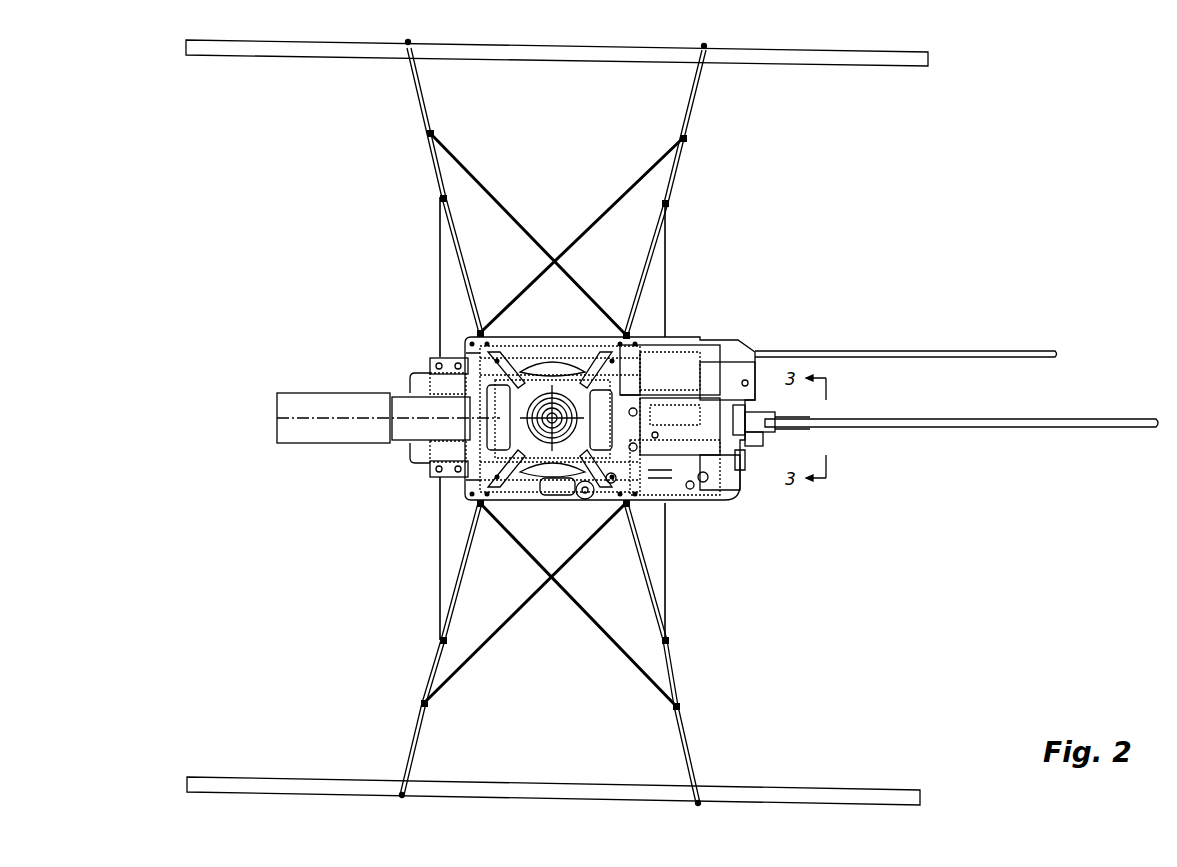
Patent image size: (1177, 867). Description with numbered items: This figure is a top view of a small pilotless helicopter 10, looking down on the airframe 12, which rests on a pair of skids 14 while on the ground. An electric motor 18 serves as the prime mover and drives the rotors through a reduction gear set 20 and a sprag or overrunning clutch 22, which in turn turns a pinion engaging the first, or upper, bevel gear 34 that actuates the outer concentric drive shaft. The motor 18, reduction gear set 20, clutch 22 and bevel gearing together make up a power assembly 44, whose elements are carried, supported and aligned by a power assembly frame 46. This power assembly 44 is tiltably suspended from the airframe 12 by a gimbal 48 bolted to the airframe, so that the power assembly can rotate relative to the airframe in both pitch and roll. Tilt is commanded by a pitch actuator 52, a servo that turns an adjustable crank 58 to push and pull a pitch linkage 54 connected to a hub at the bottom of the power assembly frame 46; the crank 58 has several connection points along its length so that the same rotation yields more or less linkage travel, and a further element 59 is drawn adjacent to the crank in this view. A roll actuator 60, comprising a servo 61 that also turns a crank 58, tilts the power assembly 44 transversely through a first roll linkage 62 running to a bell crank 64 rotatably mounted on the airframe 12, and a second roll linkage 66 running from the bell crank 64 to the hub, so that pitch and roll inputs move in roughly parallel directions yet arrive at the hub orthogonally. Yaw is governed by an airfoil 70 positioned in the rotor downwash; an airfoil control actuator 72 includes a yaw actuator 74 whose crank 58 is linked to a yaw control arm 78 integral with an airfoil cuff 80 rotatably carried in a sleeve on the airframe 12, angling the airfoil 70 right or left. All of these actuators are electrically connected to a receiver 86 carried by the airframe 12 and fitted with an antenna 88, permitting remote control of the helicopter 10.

The pilotless helicopter 10 is at (832, 618).
The airframe 12 is at (515, 505).
The skids 14 is at (577, 64).
The electric motor 18 is at (325, 393).
The reduction gear set 20 is at (392, 397).
The overrunning clutch 22 is at (470, 416).
The first bevel gear 34 is at (535, 365).
The power assembly 44 is at (410, 445).
The power assembly frame 46 is at (592, 375).
The gimbal 48 is at (552, 368).
The pitch actuator 52 is at (705, 478).
The pitch linkage 54 is at (650, 345).
The crank 58 is at (668, 425).
The screw 59 is at (702, 484).
The roll actuator 60 is at (690, 492).
The servo 61 is at (658, 486).
The first roll linkage 62 is at (609, 486).
The bell crank 64 is at (576, 500).
The second roll linkage 66 is at (545, 495).
The airfoil 70 is at (932, 428).
The airfoil control actuator 72 is at (780, 438).
The yaw actuator 74 is at (748, 490).
The yaw control arm 78 is at (768, 440).
The airfoil cuff 80 is at (800, 416).
The receiver 86 is at (744, 399).
The antenna 88 is at (880, 351).